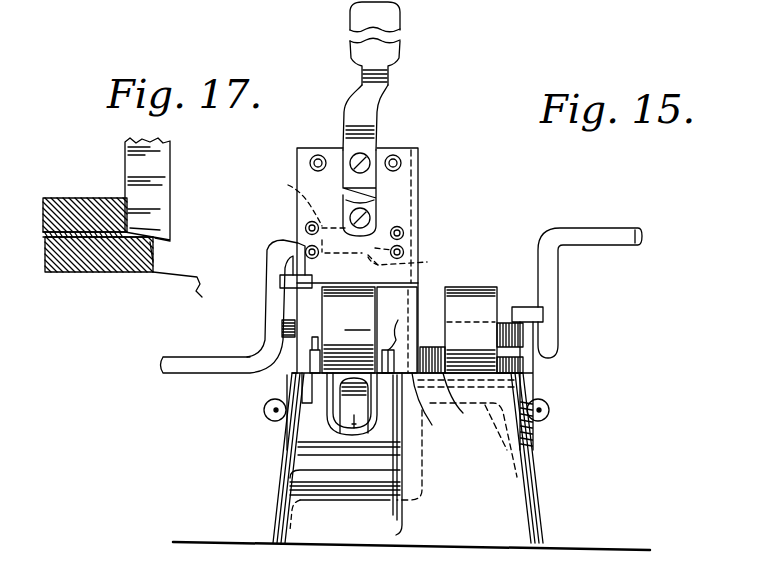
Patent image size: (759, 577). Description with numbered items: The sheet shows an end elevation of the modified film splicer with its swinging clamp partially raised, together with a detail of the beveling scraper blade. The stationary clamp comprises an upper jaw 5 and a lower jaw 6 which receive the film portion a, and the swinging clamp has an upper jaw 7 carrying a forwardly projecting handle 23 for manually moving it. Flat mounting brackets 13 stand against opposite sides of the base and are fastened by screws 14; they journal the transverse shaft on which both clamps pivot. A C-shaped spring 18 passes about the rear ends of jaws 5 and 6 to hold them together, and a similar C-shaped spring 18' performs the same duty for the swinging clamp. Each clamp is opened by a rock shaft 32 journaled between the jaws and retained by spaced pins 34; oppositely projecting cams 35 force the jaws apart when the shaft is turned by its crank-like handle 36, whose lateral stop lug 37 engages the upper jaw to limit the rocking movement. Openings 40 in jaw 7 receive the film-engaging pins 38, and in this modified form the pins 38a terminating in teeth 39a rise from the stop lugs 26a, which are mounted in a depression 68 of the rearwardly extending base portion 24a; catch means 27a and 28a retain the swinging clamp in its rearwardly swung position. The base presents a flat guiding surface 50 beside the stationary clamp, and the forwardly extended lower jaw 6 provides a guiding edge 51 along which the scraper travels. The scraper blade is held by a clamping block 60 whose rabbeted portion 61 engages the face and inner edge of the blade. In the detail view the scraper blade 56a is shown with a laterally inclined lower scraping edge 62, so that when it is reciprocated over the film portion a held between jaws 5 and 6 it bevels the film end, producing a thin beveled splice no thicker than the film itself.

In FIG. 17, the upper jaw 5 is at (73, 198).
In FIG. 15, the upper jaw 5 is at (512, 335).
In FIG. 17, the lower jaw 6 is at (80, 262).
In FIG. 15, the lower jaw 6 is at (512, 365).
In FIG. 17, the film portion a is at (102, 255).
In FIG. 15, the upper jaw 7 is at (405, 181).
In FIG. 15, the mounting brackets 13 is at (285, 380).
In FIG. 15, the screws 14 is at (270, 420).
In FIG. 15, the C-shaped spring 18 is at (471, 330).
In FIG. 15, the C-shaped spring 18' is at (348, 330).
In FIG. 15, the handle 23 is at (392, 58).
In FIG. 15, the rearwardly extending portion 24a is at (497, 477).
In FIG. 15, the stop lugs 26a is at (320, 427).
In FIG. 15, the catch means 27a is at (372, 203).
In FIG. 15, the catch means 28a is at (352, 448).
In FIG. 15, the rock shaft 32 is at (288, 186).
In FIG. 15, the pins 34 is at (305, 252).
In FIG. 15, the cams 35 is at (430, 263).
In FIG. 15, the handle 36 is at (268, 318).
In FIG. 15, the stop lug 37 is at (312, 280).
In FIG. 15, the pins 38 is at (293, 362).
In FIG. 15, the pins 38a is at (435, 305).
In FIG. 15, the teeth 39a is at (243, 337).
In FIG. 15, the openings 40 is at (318, 155).
In FIG. 17, the guiding surface 50 is at (196, 276).
In FIG. 17, the guiding edge 51 is at (153, 255).
In FIG. 17, the scraper blade 56a is at (155, 193).
In FIG. 15, the clamping block 60 is at (457, 436).
In FIG. 15, the rabbeted portion 61 is at (464, 402).
In FIG. 17, the inclined scraping edge 62 is at (160, 228).
In FIG. 15, the depression 68 is at (310, 465).